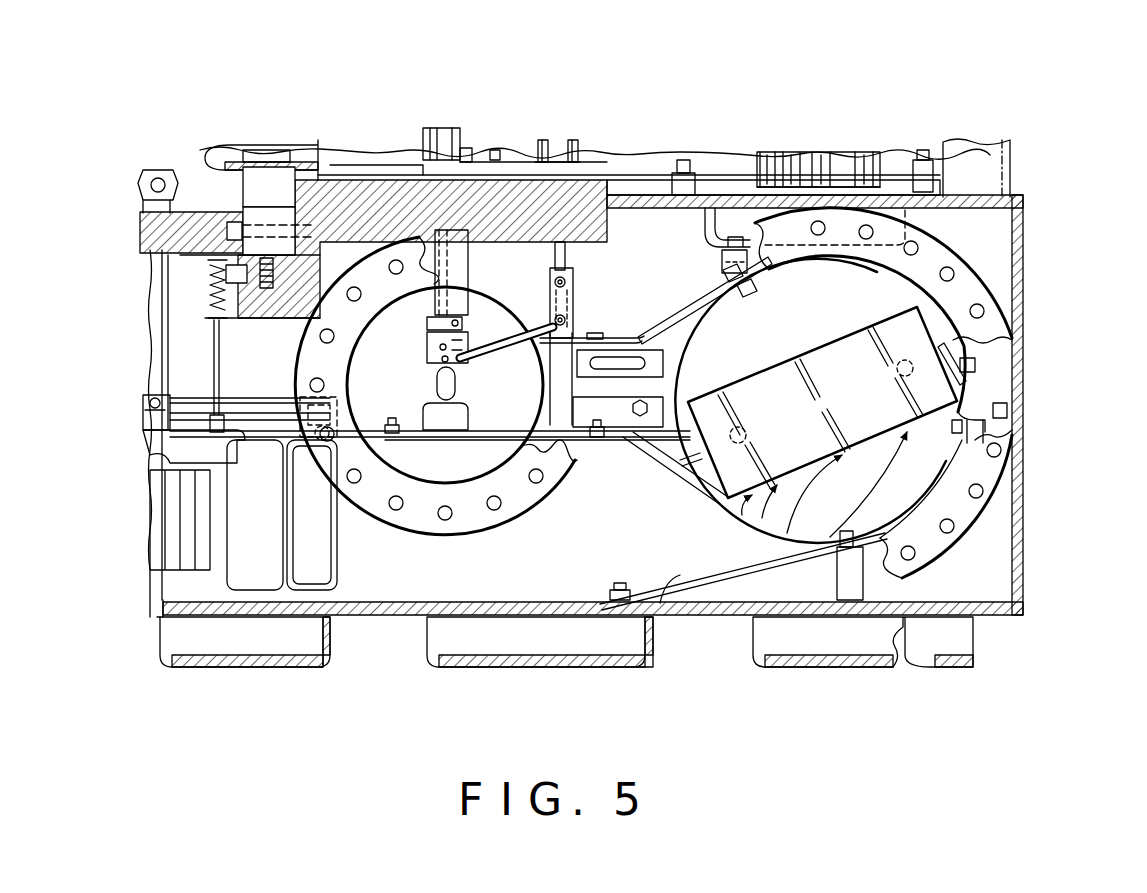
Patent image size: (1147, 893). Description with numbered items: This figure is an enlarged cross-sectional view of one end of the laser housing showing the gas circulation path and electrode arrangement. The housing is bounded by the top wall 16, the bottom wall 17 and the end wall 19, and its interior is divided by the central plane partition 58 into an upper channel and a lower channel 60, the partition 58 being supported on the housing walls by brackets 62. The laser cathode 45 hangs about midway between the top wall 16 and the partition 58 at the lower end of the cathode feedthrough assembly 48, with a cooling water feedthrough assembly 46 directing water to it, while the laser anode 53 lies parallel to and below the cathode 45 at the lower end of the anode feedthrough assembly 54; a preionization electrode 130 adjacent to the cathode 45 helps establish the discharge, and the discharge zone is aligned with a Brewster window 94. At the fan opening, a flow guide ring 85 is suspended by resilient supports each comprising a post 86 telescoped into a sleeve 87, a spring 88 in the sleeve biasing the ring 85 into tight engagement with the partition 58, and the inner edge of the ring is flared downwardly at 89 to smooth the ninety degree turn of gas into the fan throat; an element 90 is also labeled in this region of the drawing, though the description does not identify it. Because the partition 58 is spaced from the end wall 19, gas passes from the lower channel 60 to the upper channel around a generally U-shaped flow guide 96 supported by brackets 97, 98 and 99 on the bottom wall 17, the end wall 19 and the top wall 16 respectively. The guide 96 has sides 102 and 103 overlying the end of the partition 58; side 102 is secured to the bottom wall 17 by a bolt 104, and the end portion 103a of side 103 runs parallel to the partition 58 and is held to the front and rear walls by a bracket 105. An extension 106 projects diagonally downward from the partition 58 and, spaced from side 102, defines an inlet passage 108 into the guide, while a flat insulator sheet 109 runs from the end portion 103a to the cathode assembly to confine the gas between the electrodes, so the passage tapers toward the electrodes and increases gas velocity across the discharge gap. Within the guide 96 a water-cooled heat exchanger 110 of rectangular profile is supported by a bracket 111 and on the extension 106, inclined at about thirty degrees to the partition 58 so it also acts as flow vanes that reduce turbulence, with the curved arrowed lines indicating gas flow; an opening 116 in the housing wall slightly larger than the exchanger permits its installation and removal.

The housing top wall 16 is at (970, 195).
The housing bottom wall 17 is at (690, 613).
The end wall 19 is at (1025, 525).
The laser cathode 45 is at (427, 357).
The cooling water feedthrough assembly 46 is at (468, 150).
The cathode feedthrough assembly 48 is at (433, 130).
The laser anode 53 is at (470, 440).
The anode feedthrough assembly 54 is at (563, 160).
The central plane partition 58 is at (290, 333).
The lower channel 60 is at (370, 585).
The bracket 62 is at (312, 410).
The flow guide ring 85 is at (180, 427).
The post 86 is at (213, 340).
The sleeve 87 is at (205, 263).
The spring 88 is at (212, 297).
The flared inner edge 89 is at (165, 450).
The bolt 90 is at (445, 432).
The Brewster window 94 is at (437, 385).
The flow guide 96 is at (772, 255).
The bracket 97 is at (870, 560).
The bracket 98 is at (985, 440).
The bracket 99 is at (683, 300).
The side 102 is at (680, 575).
The side 103 is at (700, 300).
The end portion 103a is at (612, 340).
The bolt 104 is at (620, 600).
The bracket 105 is at (583, 245).
The extension 106 is at (712, 505).
The inlet passage 108 is at (765, 545).
The flat insulator sheet 109 is at (520, 365).
The heat exchanger 110 is at (960, 445).
The bracket 111 is at (955, 365).
The opening 116 is at (850, 560).
The preionization electrode 130 is at (505, 330).